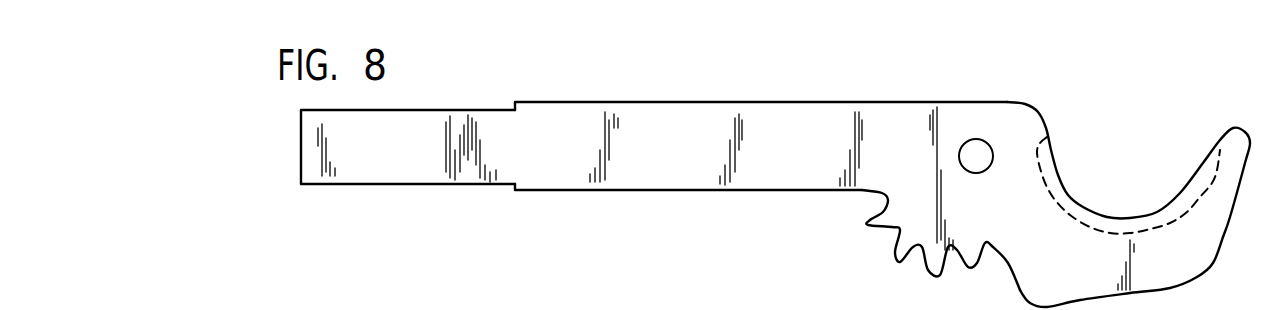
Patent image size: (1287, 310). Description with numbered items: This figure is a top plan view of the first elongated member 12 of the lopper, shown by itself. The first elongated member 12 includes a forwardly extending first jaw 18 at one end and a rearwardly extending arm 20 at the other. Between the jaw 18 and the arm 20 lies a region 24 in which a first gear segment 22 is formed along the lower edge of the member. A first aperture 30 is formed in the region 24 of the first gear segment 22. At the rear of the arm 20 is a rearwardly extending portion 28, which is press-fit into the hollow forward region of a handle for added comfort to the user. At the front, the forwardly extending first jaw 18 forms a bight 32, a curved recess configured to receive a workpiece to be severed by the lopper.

The first elongated member 12 is at (676, 98).
The first jaw 18 is at (1230, 197).
The arm 20 is at (560, 184).
The first gear segment 22 is at (868, 228).
The region 24 is at (920, 155).
The rearwardly extending portion 28 is at (410, 185).
The first aperture 30 is at (978, 140).
The bight 32 is at (1140, 135).